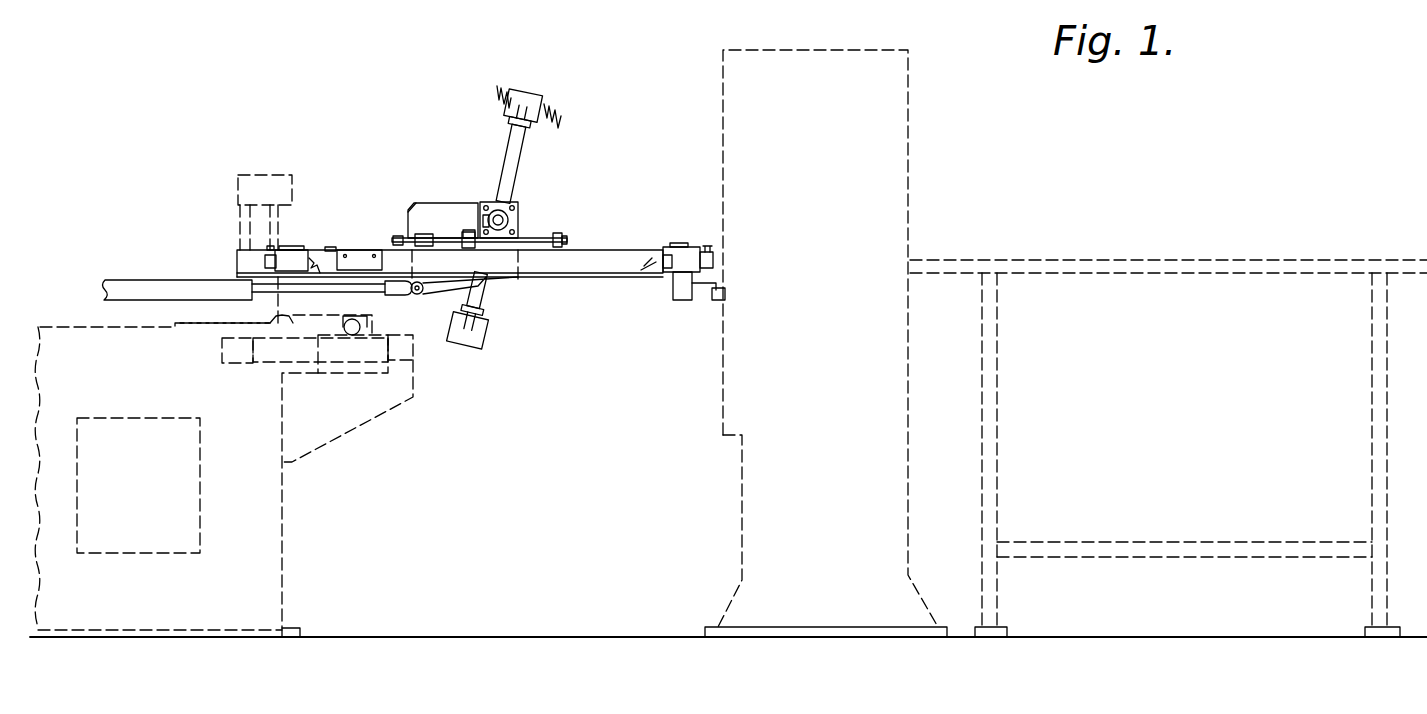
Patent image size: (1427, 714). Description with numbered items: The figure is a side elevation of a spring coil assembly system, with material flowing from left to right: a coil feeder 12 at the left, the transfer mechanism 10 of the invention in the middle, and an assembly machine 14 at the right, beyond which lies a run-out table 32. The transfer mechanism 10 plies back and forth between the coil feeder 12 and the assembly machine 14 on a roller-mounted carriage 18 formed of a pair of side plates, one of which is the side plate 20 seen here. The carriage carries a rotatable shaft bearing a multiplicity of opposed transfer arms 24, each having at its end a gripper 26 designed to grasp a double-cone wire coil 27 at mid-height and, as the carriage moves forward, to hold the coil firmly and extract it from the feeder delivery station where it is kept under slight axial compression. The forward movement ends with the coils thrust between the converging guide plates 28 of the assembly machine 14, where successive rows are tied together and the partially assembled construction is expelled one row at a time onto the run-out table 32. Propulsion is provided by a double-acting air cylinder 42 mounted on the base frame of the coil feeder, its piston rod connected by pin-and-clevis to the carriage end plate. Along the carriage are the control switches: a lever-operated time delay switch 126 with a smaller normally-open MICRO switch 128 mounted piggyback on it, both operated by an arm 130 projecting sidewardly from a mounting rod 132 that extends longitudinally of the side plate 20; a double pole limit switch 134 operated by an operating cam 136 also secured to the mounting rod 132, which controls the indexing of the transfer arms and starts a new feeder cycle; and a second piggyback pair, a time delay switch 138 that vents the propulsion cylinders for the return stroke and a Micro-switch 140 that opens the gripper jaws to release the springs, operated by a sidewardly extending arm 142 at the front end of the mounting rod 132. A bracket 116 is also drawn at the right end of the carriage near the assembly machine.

The transfer mechanism 10 is at (534, 309).
The coil feeder 12 is at (284, 541).
The assembly machine 14 is at (753, 533).
The carriage 18 is at (426, 200).
The side plate 20 is at (408, 204).
The transfer arm 24 is at (518, 172).
The gripper 26 is at (524, 85).
The double-cone wire coil 27 is at (561, 110).
The converging guide plates 28 is at (715, 246).
The run-out table 32 is at (1137, 262).
The double-acting air cylinder 42 is at (151, 291).
The support bracket 116 is at (684, 298).
The lever-operated time delay switch 126 is at (297, 260).
The normally-open MICRO switch 128 is at (288, 247).
The arm 130 is at (407, 234).
The mounting rod 132 is at (537, 238).
The double pole limit switch 134 is at (363, 263).
The operating cam 136 is at (432, 238).
The normally-open time delay switch 138 is at (659, 259).
The normally-open Micro-switch 140 is at (688, 246).
The sidewardly extending arm 142 is at (558, 235).